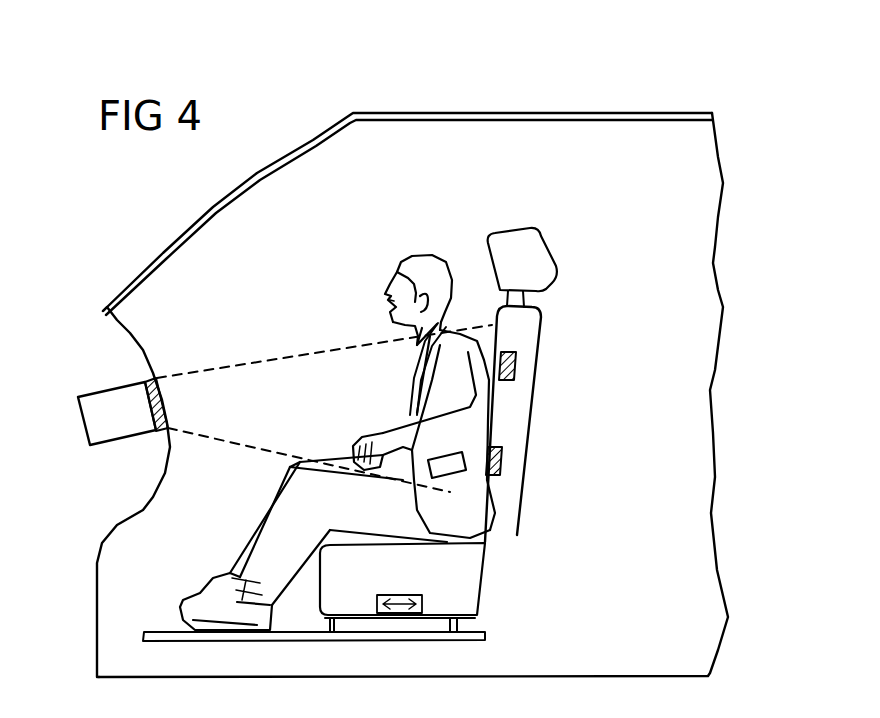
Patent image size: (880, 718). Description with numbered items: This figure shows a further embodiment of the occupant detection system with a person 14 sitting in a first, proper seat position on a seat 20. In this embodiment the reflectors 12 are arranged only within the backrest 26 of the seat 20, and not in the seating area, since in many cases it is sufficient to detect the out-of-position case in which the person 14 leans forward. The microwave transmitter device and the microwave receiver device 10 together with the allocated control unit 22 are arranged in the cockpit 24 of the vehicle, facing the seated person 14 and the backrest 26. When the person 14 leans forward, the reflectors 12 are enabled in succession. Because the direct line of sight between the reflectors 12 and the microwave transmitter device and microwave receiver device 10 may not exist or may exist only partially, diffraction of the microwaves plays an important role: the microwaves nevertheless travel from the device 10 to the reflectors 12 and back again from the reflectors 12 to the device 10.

The microwave transmitter device and microwave receiver device 10 is at (166, 418).
The reflectors 12 is at (516, 369).
The person 14 is at (412, 388).
The seat 20 is at (482, 602).
The control unit 22 is at (110, 403).
The cockpit 24 is at (120, 470).
The backrest 26 is at (537, 331).